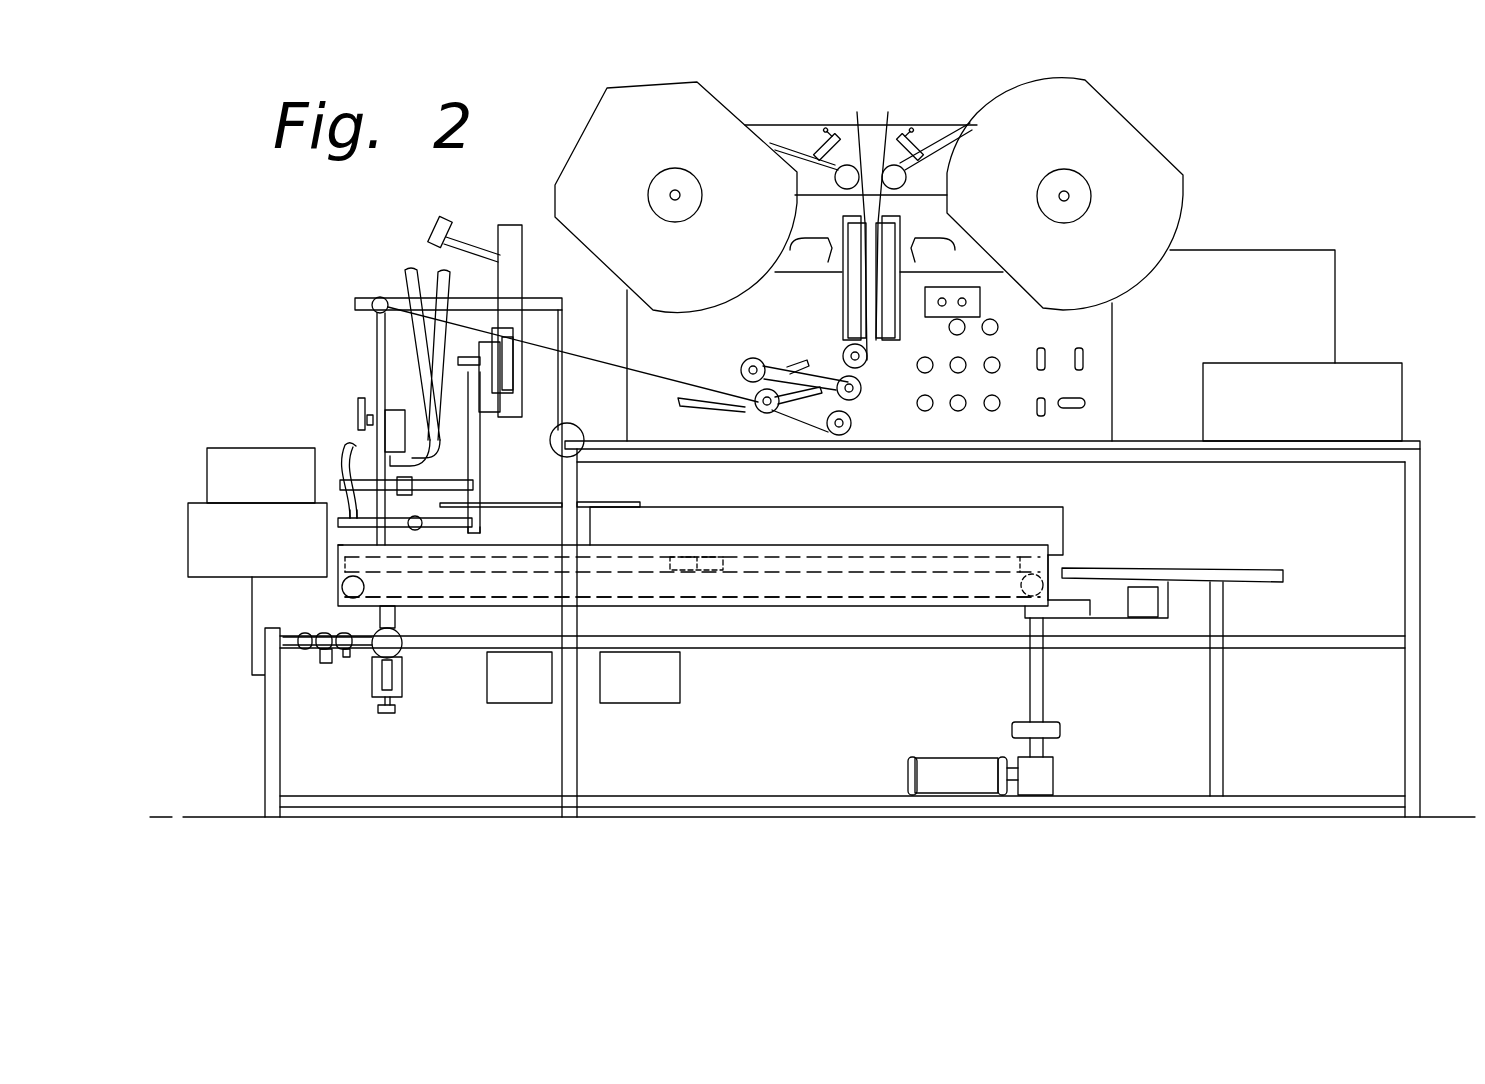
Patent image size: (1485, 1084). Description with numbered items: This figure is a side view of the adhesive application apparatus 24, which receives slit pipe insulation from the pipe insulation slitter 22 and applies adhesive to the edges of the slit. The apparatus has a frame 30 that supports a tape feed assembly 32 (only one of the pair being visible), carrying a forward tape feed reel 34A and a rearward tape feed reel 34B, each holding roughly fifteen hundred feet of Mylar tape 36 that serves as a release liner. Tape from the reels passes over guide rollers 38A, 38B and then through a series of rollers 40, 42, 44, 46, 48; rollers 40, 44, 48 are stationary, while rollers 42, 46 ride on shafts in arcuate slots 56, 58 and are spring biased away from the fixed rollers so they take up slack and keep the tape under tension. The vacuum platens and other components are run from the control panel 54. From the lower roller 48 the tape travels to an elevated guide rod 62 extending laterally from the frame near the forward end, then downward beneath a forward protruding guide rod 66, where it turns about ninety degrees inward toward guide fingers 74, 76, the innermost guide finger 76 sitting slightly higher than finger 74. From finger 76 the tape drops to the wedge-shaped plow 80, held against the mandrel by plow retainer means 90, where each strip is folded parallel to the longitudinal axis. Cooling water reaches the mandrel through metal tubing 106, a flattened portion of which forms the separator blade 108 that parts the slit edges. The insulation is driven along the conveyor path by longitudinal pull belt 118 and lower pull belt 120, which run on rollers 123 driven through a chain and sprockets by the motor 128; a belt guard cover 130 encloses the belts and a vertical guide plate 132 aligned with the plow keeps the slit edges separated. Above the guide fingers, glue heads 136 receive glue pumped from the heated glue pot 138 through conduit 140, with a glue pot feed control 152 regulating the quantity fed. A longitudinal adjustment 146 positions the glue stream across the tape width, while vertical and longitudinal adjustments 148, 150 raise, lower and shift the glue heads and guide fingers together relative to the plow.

The pipe insulation slitter 22 is at (238, 453).
The adhesive application apparatus 24 is at (933, 55).
The frame 30 is at (1142, 452).
The tape feed assembly 32 is at (770, 125).
The forward tape feed reel 34A is at (628, 100).
The rearward tape feed reel 34B is at (1105, 110).
The Mylar tape 36 is at (628, 378).
The guide roller 38A is at (848, 166).
The guide roller 38B is at (888, 166).
The roller 40 is at (846, 348).
The spring biased roller 42 is at (748, 366).
The roller 44 is at (862, 393).
The spring biased roller 46 is at (758, 410).
The lower roller 48 is at (852, 425).
The control panel 54 is at (1090, 325).
The arcuate slot 56 is at (797, 352).
The arcuate slot 58 is at (688, 406).
The elevated guide rod 62 is at (374, 313).
The forward protruding guide rod 66 is at (337, 523).
The guide finger 74 is at (563, 487).
The innermost guide finger 76 is at (440, 484).
The wedge-shaped plow 80 is at (478, 530).
The plow retainer means 90 is at (625, 502).
The metal tubing 106 is at (345, 470).
The separator blade 108 is at (350, 517).
The longitudinal pull belt 118 is at (598, 553).
The lower pull belt 120 is at (812, 598).
The roller 123 is at (366, 590).
The motor 128 is at (955, 763).
The belt guard cover 130 is at (990, 545).
The longitudinal guide plate 132 is at (898, 512).
The glue head 136 is at (398, 452).
The glue pot 138 is at (1280, 255).
The conduit 140 is at (402, 272).
The longitudinal adjustment 146 is at (357, 412).
The vertical adjustment 148 is at (470, 365).
The longitudinal adjustment 150 is at (572, 432).
The glue pot feed control 152 is at (458, 232).